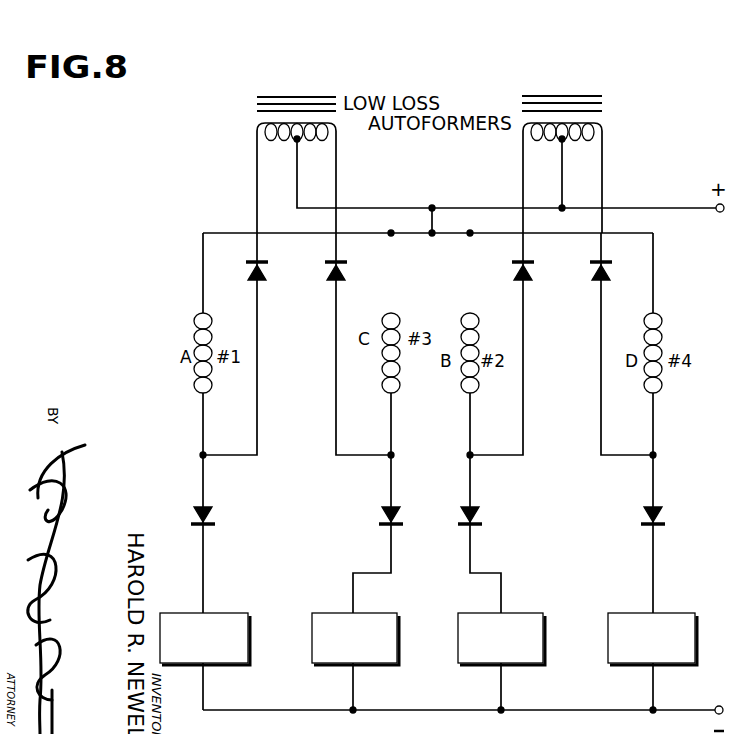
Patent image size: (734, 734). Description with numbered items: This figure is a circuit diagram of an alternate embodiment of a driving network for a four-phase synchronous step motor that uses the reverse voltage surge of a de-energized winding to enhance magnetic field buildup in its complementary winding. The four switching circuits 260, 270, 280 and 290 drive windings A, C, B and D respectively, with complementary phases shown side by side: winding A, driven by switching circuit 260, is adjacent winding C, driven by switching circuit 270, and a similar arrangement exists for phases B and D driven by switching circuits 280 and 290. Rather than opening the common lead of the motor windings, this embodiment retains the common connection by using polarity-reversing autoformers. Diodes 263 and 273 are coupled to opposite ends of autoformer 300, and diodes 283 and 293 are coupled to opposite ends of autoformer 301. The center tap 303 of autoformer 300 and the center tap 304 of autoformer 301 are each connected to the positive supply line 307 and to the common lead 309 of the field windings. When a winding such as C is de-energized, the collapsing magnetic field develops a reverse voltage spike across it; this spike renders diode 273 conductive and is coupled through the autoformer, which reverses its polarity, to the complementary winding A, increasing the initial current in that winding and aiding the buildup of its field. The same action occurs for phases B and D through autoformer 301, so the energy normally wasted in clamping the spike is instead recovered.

The autoformer 300 is at (313, 86).
The autoformer 301 is at (556, 86).
The center tap 303 is at (296, 140).
The center tap 304 is at (563, 140).
The positive supply line 307 is at (681, 183).
The common lead 309 is at (445, 211).
The diode 263 is at (262, 281).
The diode 273 is at (341, 281).
The diode 283 is at (527, 281).
The diode 293 is at (613, 272).
The switching circuit 260 is at (235, 613).
The switching circuit 270 is at (386, 613).
The switching circuit 280 is at (530, 613).
The switching circuit 290 is at (668, 613).